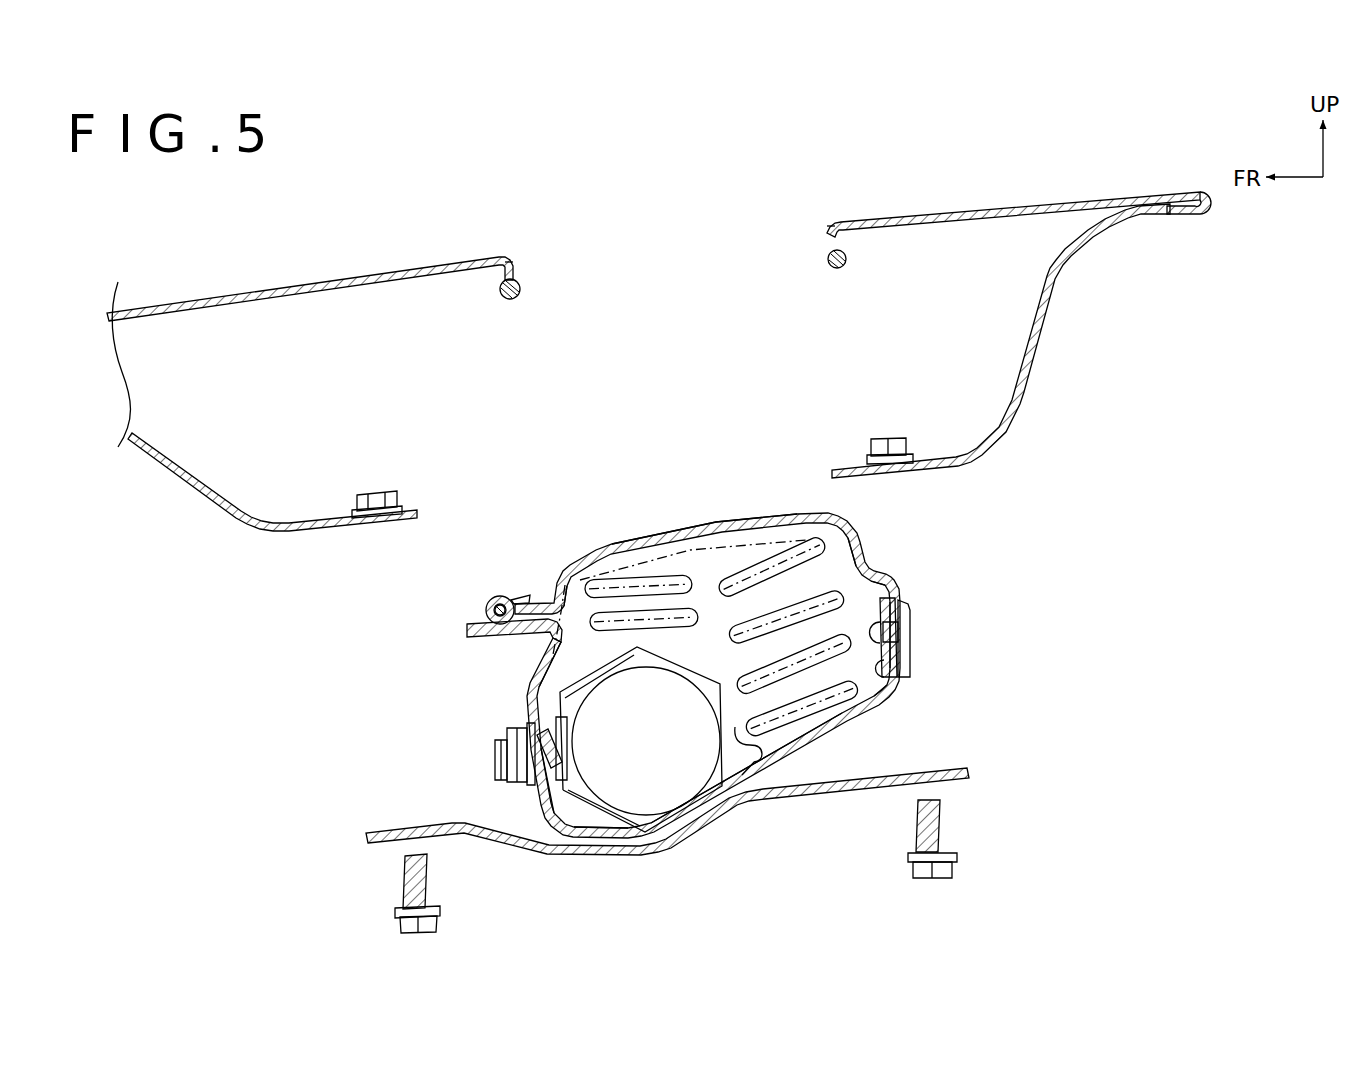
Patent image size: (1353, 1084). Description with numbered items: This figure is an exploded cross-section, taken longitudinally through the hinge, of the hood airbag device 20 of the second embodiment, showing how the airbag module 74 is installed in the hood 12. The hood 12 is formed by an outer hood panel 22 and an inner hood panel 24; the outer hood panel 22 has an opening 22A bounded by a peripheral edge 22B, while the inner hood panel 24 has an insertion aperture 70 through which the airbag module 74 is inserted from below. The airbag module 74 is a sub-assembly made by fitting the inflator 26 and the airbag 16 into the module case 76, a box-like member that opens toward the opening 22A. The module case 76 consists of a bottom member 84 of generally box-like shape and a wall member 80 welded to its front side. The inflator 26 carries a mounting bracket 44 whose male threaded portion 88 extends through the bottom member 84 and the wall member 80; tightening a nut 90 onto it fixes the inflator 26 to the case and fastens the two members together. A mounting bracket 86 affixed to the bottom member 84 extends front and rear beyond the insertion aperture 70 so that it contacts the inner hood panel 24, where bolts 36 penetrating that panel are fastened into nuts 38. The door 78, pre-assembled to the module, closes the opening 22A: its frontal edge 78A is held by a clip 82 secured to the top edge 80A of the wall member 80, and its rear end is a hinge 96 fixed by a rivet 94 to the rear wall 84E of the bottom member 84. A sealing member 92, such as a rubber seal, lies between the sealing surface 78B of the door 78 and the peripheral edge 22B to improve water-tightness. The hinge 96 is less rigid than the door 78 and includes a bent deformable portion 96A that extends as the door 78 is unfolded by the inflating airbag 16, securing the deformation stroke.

The hood 12 is at (320, 247).
The airbag 16 is at (745, 540).
The hood airbag device 20 is at (596, 169).
The outer hood panel 22 is at (985, 203).
The opening 22A is at (655, 258).
The peripheral edge 22B is at (513, 268).
The inner hood panel 24 is at (252, 523).
The inflator 26 is at (640, 817).
The bolts 36 is at (442, 915).
The nuts 38 is at (363, 496).
The mounting bracket 44 is at (703, 663).
The insertion aperture 70 is at (628, 440).
The airbag module 74 is at (701, 856).
The module case 76 is at (824, 747).
The door 78 is at (702, 521).
The frontal edge 78A is at (517, 595).
The sealing surface 78B is at (553, 588).
The wall member 80 is at (524, 693).
The top edge 80A is at (500, 639).
The clip 82 is at (483, 608).
The bottom member 84 is at (545, 828).
The rear wall 84E is at (899, 681).
The mounting bracket 86 is at (787, 798).
The male threaded portion 88 is at (497, 748).
The nut 90 is at (505, 732).
The sealing member 92 is at (511, 300).
The rivet 94 is at (911, 623).
The hinge 96 is at (899, 588).
The deformable portion 96A is at (851, 530).